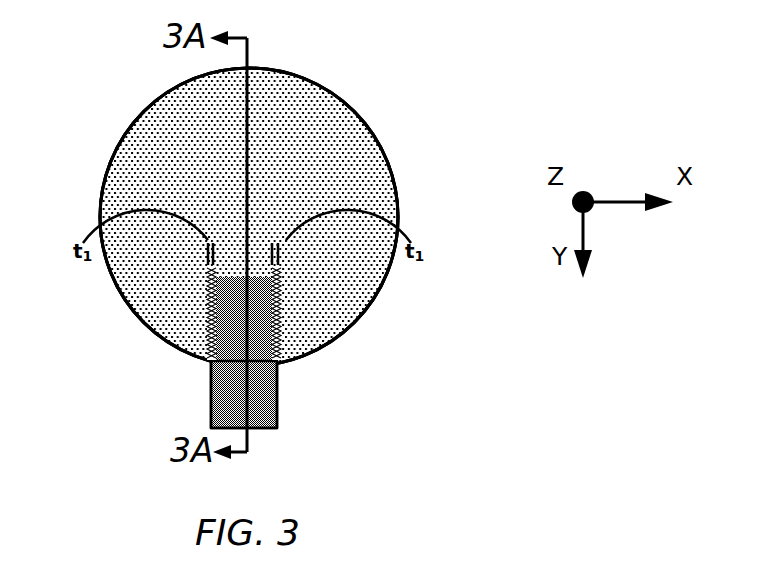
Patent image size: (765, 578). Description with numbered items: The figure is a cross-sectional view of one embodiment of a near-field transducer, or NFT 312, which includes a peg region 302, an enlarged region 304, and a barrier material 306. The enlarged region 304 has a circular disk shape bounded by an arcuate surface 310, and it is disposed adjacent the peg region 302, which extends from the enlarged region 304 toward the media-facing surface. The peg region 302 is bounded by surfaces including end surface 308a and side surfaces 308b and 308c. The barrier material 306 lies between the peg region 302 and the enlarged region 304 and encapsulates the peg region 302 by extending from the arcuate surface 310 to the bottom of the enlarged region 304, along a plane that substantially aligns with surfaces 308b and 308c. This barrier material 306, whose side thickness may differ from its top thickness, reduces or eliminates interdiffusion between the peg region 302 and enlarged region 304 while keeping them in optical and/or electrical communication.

The peg region 302 is at (290, 423).
The enlarged region 304 is at (368, 70).
The barrier material 306 is at (208, 316).
The end surface 308a is at (263, 432).
The surface 308b is at (210, 388).
The surface 308c is at (278, 389).
The arcuate surface 310 is at (122, 135).
The near-field transducer 312 is at (113, 73).